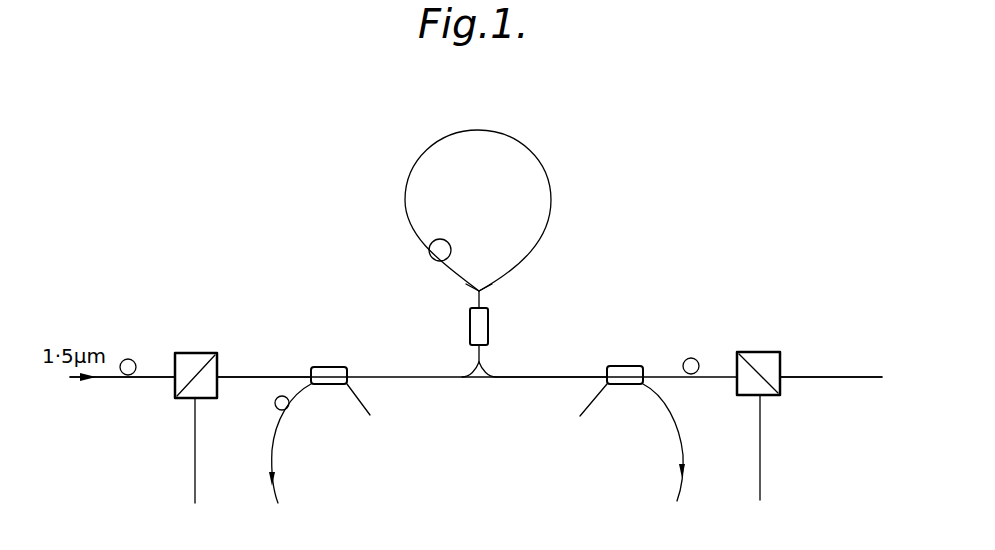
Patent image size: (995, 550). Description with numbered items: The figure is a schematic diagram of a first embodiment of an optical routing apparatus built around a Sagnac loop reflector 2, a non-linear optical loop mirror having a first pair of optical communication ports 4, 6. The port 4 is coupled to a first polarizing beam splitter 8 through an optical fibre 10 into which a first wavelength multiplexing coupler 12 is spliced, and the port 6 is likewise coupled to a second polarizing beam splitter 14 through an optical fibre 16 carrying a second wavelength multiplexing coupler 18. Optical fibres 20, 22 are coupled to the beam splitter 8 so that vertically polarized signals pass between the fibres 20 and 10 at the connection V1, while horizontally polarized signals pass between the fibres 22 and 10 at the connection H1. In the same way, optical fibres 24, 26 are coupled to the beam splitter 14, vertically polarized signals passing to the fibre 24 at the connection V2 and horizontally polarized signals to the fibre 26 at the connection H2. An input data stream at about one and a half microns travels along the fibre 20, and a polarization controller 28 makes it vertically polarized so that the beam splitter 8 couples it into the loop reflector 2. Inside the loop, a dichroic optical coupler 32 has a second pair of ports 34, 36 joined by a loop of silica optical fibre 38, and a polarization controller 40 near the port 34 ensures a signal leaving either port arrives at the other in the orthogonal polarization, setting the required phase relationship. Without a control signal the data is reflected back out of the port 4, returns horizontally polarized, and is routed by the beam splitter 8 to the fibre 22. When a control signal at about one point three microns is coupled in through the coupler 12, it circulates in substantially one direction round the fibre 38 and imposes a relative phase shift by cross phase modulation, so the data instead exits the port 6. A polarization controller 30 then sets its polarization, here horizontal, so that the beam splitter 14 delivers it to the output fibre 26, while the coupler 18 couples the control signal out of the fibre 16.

The Sagnac loop reflector 2 is at (454, 259).
The first optical communication port 4 is at (463, 378).
The second optical communication port 6 is at (492, 378).
The first polarizing beam splitter 8 is at (199, 352).
The optical fibre 10 is at (268, 376).
The first wavelength multiplexing coupler 12 is at (331, 366).
The second polarizing beam splitter 14 is at (752, 352).
The optical fibre 16 is at (575, 376).
The second wavelength multiplexing coupler 18 is at (631, 366).
The optical fibre 20 is at (110, 377).
The optical fibre 22 is at (195, 472).
The optical fibre 24 is at (836, 377).
The optical fibre 26 is at (760, 482).
The polarization controller 28 is at (133, 358).
The polarization controller 30 is at (694, 358).
The dichroic optical coupler 32 is at (490, 327).
The port 34 is at (456, 290).
The port 36 is at (487, 286).
The loop of silica optical fibre 38 is at (503, 130).
The polarization controller 40 is at (432, 242).
The connection V1 is at (168, 379).
The connection H1 is at (200, 402).
The connection V2 is at (786, 367).
The connection H2 is at (765, 400).